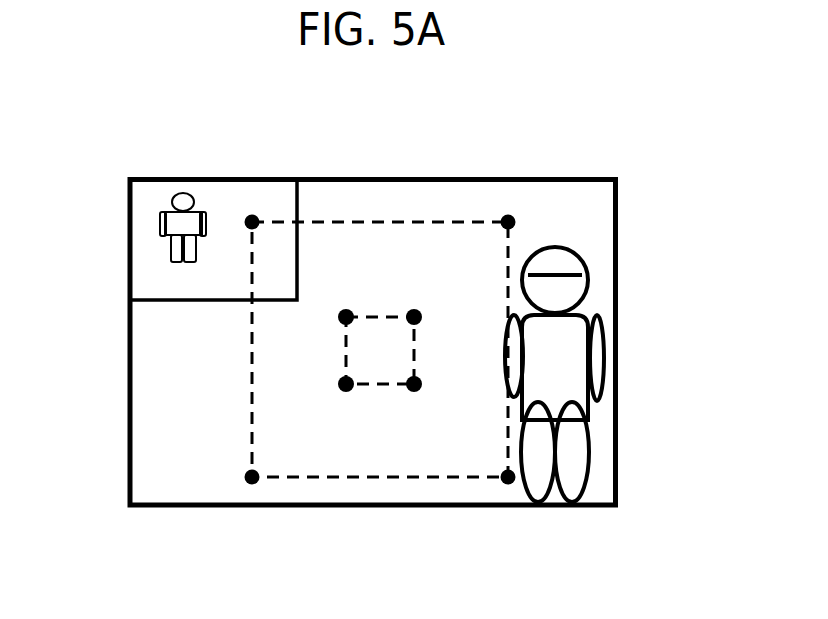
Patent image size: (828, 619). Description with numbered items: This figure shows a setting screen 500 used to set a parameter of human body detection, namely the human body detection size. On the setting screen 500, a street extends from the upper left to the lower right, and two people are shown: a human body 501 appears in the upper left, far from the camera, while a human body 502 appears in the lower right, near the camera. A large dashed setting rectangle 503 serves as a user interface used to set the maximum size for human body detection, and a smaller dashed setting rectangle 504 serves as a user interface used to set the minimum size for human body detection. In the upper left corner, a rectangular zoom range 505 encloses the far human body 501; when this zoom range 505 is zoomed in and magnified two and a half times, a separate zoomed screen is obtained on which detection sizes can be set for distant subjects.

The setting screen 500 is at (475, 178).
The human body 501 is at (165, 238).
The human body 502 is at (604, 327).
The setting rectangle 503 is at (378, 475).
The setting rectangle 504 is at (373, 316).
The zoom range 505 is at (163, 301).